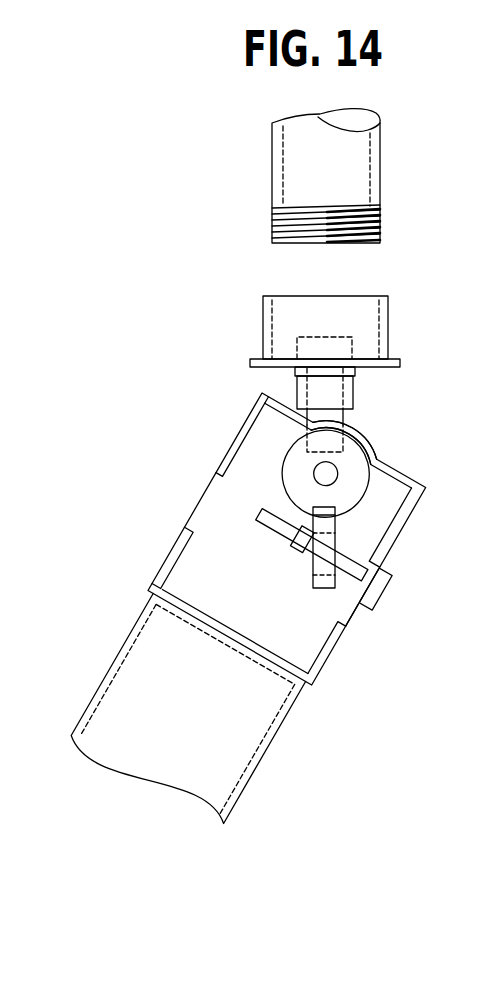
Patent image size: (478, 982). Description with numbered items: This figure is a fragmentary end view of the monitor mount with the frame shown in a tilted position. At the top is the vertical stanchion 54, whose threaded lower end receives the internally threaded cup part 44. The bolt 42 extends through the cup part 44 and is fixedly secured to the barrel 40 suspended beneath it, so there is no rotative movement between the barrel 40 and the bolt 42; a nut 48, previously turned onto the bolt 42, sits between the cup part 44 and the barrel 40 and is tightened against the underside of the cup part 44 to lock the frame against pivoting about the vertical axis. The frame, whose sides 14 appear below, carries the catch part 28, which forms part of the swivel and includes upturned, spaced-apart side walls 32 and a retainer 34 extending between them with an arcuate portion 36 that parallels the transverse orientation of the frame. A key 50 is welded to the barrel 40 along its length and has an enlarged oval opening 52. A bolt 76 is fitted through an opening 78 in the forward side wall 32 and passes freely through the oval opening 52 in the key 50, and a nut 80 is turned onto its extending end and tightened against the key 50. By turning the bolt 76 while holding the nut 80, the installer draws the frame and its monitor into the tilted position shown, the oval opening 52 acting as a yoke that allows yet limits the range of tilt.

The sides 14 is at (125, 640).
The catch part 28 is at (232, 445).
The side walls 32 is at (188, 517).
The retainer 34 is at (287, 402).
The arcuate portion 36 is at (372, 444).
The barrel 40 is at (357, 488).
The bolt 42 is at (343, 414).
The cup part 44 is at (263, 318).
The nut 48 is at (353, 380).
The key 50 is at (322, 588).
The oval opening 52 is at (312, 567).
The stanchion 54 is at (272, 182).
The bolt 76 is at (390, 583).
The opening 78 is at (394, 558).
The nut 80 is at (284, 558).